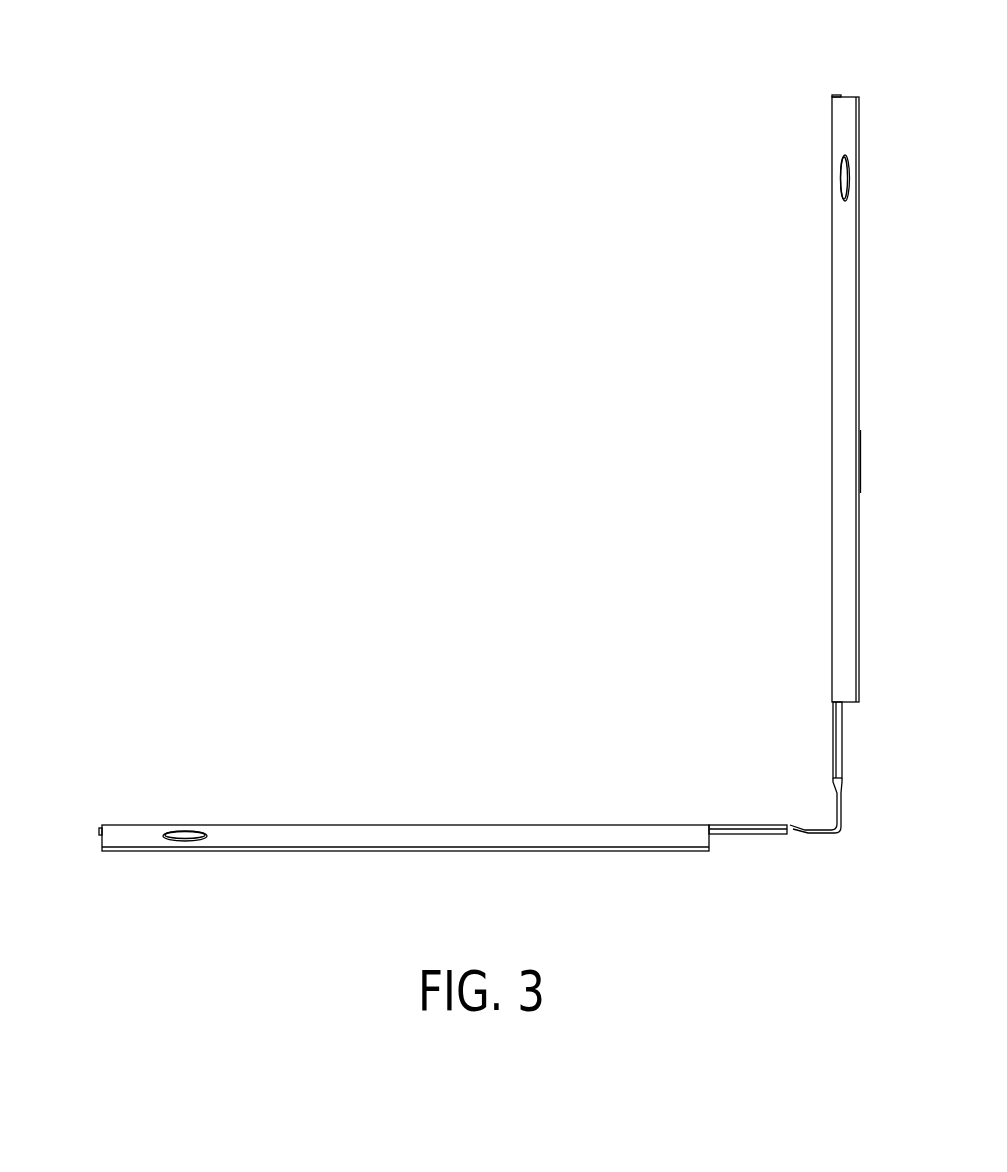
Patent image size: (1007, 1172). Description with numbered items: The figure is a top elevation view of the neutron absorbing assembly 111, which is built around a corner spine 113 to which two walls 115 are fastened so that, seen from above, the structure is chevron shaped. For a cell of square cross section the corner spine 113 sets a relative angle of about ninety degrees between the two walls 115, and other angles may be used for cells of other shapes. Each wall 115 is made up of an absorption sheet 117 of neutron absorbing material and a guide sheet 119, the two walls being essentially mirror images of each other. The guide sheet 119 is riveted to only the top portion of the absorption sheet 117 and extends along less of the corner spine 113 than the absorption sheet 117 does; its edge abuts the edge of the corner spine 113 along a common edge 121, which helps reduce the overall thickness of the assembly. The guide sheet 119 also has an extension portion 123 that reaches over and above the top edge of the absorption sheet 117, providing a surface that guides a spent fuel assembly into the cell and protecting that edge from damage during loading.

The neutron absorbing assembly 111 is at (401, 343).
The corner spine 113 is at (833, 840).
The wall 115 is at (836, 96).
The absorption sheet 117 is at (843, 735).
The guide sheet 119 is at (859, 290).
The common edge 121 is at (832, 701).
The extension portion 123 is at (848, 668).